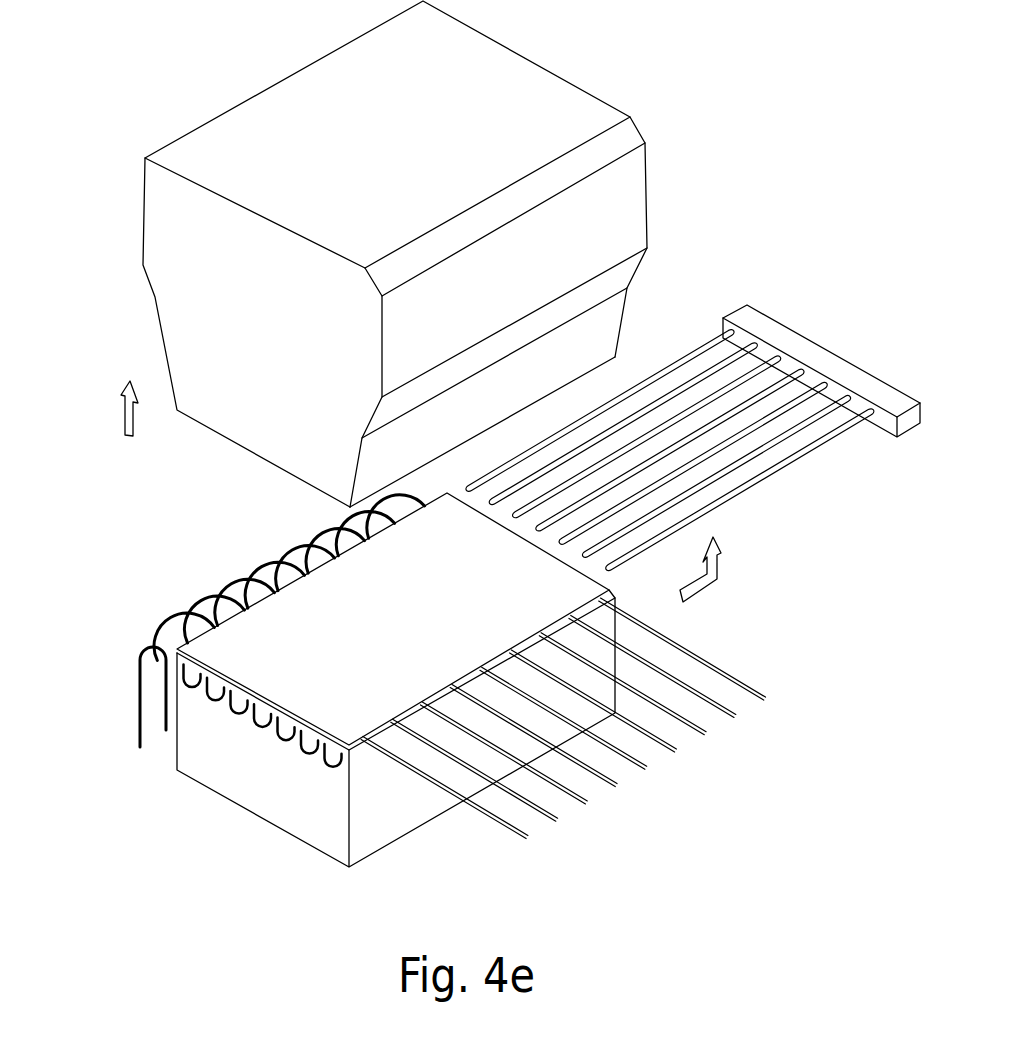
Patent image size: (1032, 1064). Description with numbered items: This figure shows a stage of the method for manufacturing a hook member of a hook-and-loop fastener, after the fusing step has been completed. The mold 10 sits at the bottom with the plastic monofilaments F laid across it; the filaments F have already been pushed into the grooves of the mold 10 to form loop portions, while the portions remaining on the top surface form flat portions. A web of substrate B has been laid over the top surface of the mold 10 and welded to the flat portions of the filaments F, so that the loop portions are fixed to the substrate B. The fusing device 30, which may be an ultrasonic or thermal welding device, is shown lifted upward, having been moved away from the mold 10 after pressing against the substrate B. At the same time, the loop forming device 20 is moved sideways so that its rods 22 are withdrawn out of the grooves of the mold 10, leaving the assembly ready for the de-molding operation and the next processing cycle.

The fusing device 30 is at (523, 90).
The loop forming device 20 is at (693, 410).
The rods 22 is at (740, 498).
The mold 10 is at (387, 810).
The substrate B is at (215, 600).
The plastic monofilaments F is at (137, 718).